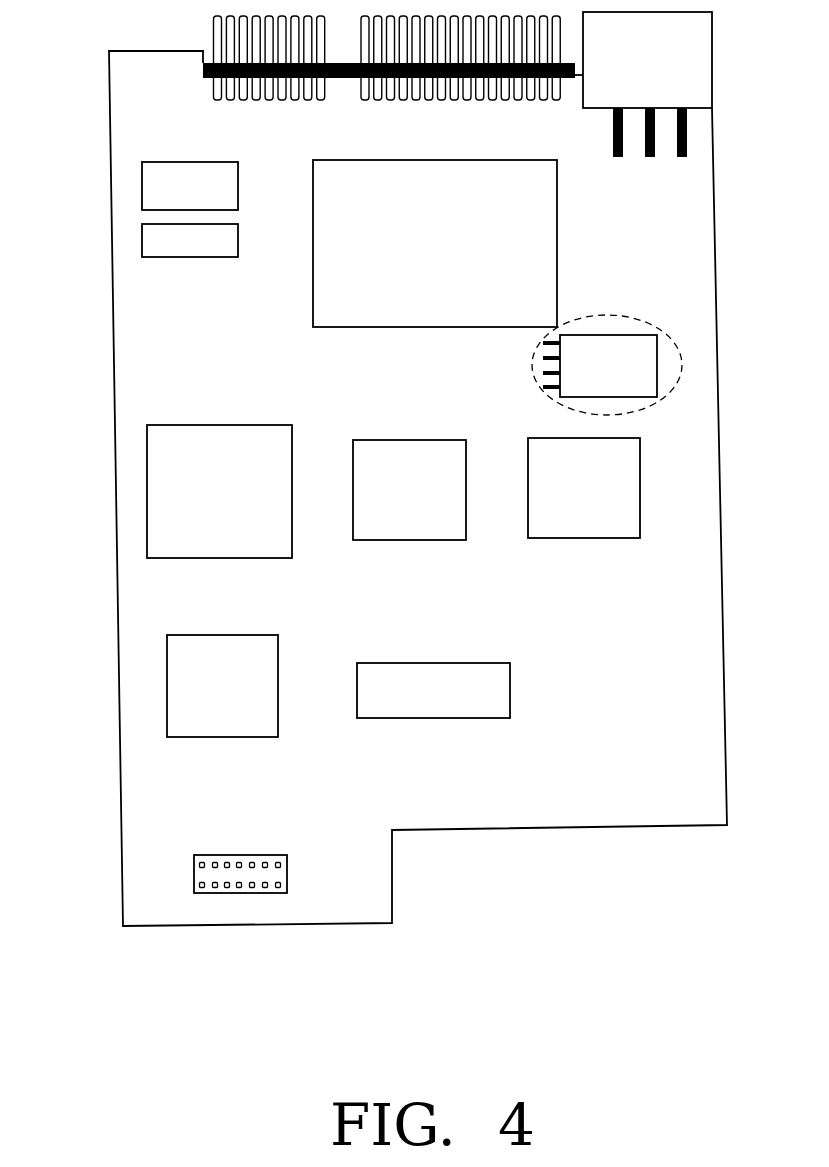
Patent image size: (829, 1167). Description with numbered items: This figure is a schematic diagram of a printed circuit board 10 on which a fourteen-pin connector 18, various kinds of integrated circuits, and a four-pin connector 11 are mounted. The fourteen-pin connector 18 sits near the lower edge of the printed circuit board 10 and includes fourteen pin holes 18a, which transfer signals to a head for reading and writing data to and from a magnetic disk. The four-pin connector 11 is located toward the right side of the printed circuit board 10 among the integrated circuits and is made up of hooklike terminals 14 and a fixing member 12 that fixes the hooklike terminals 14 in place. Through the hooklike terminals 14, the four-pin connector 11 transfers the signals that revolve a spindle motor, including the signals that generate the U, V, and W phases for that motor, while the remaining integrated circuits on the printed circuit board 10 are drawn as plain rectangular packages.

The printed circuit board 10 is at (85, 79).
The 4-pin connector 11 is at (664, 398).
The fixing member 12 is at (600, 335).
The hooklike terminals 14 is at (541, 386).
The 14-pin connector 18 is at (250, 845).
The pin holes 18a is at (278, 893).